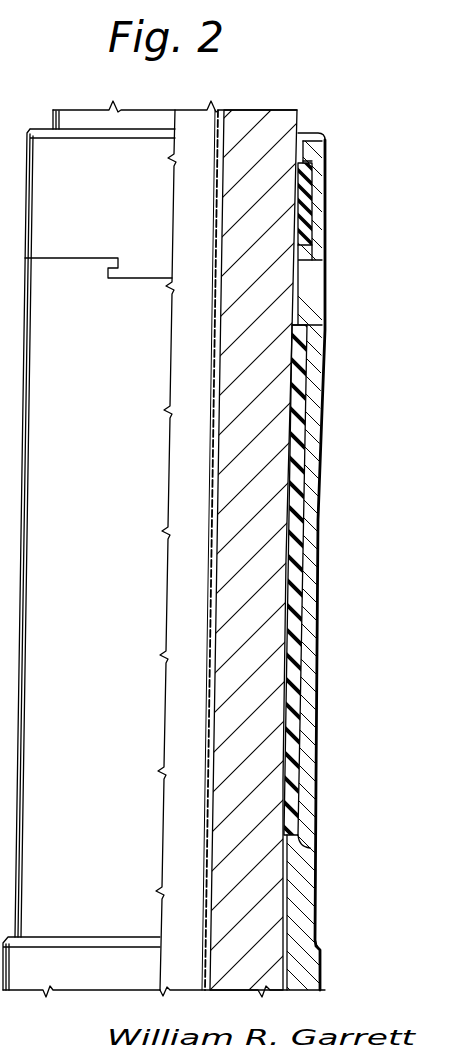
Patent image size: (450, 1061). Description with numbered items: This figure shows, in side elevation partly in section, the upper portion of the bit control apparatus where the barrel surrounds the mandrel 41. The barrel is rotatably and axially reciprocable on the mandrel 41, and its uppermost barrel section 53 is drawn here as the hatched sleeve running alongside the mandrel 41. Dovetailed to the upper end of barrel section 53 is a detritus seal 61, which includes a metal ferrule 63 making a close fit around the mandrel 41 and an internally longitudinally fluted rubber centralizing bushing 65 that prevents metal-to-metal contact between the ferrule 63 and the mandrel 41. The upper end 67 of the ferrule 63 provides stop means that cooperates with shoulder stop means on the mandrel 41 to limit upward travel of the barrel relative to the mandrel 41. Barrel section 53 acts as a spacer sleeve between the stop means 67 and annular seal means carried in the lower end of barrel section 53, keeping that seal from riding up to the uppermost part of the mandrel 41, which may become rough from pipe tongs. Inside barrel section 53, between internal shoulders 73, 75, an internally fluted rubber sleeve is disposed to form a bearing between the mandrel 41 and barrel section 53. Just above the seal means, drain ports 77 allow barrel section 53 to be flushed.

The mandrel 41 is at (272, 110).
The barrel section 53 is at (308, 663).
The detritus seal 61 is at (318, 223).
The metal ferrule 63 is at (317, 158).
The centralizing bushing 65 is at (304, 201).
The upper end of thimble 67 is at (307, 135).
The internal shoulder 73 is at (307, 326).
The internal shoulder 75 is at (310, 848).
The drain ports 77 is at (300, 508).